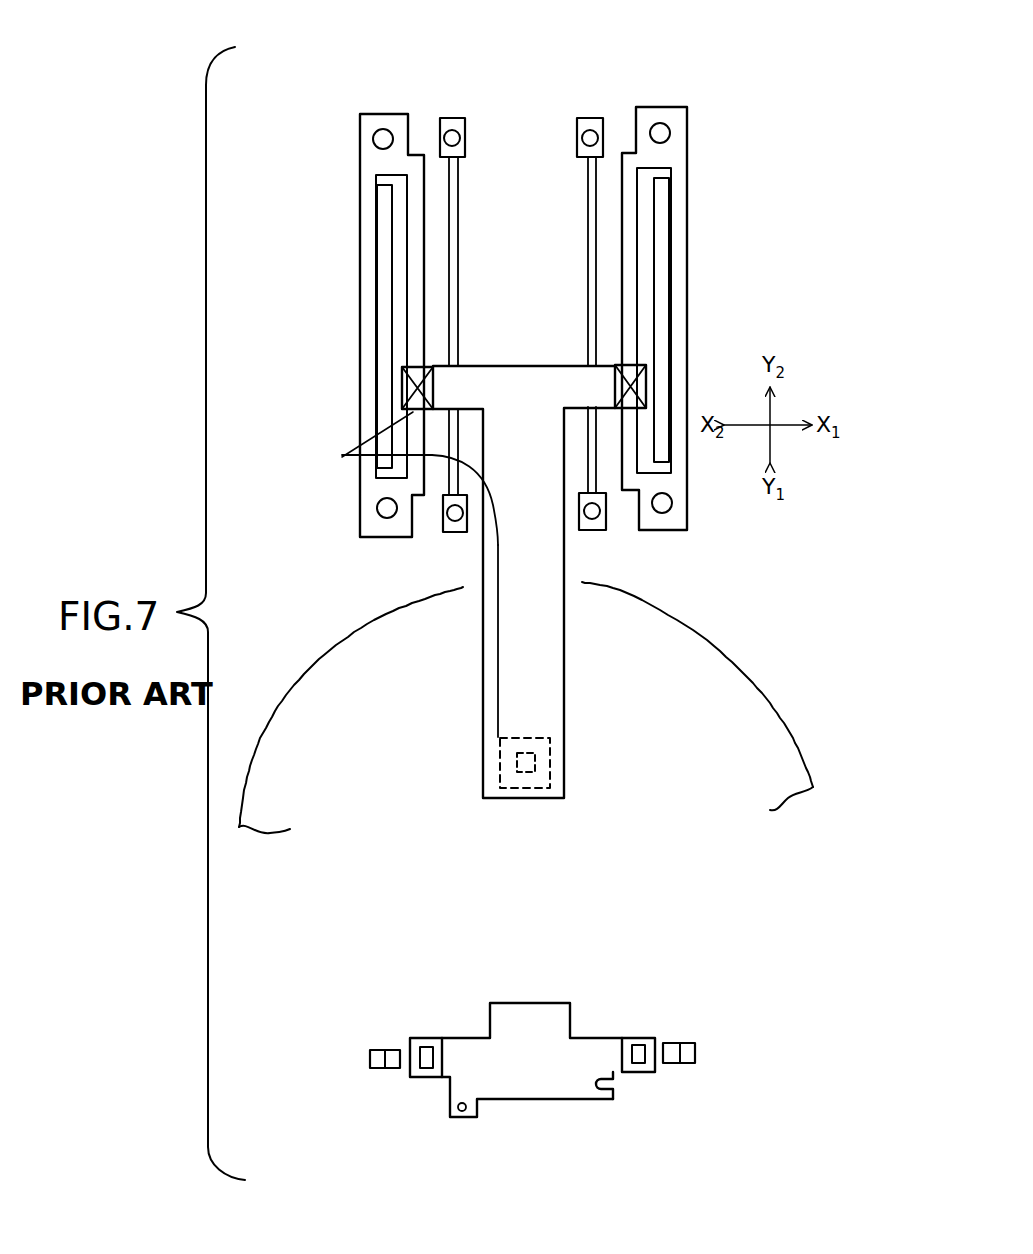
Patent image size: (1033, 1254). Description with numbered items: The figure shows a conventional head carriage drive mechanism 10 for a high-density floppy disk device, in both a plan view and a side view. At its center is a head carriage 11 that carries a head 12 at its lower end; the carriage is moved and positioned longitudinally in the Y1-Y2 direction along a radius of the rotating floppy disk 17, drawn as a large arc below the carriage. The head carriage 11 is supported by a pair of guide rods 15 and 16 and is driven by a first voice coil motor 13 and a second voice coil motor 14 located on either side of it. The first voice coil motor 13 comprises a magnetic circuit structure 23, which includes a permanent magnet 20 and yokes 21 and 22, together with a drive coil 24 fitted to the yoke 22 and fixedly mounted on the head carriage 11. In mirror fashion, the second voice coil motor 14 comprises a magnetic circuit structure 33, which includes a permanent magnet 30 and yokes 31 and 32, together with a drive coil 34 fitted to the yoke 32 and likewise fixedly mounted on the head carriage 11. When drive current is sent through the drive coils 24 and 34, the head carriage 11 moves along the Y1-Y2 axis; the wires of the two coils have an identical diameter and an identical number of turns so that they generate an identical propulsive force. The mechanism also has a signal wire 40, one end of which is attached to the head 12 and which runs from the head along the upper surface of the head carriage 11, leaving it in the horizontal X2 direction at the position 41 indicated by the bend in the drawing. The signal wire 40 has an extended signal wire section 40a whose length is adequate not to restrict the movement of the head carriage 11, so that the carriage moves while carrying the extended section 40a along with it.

The head carriage drive mechanism 10 is at (707, 62).
The head carriage 11 is at (568, 668).
The head 12 is at (550, 762).
The first voice coil motor 13 is at (370, 645).
The second voice coil motor 14 is at (651, 644).
The guide rod 15 is at (458, 305).
The guide rod 16 is at (587, 300).
The floppy disk 17 is at (770, 697).
The permanent magnet 20 is at (383, 353).
The yoke 21 is at (372, 426).
The yoke 22 is at (413, 277).
The magnetic circuit structure 23 is at (355, 223).
The drive coil 24 is at (352, 459).
The permanent magnet 30 is at (663, 267).
The yoke 31 is at (677, 187).
The yoke 32 is at (620, 242).
The magnetic circuit structure 33 is at (698, 215).
The drive coil 34 is at (640, 388).
The signal wire 40 is at (435, 462).
The extended signal wire section 40a is at (427, 458).
The position 41 is at (493, 491).